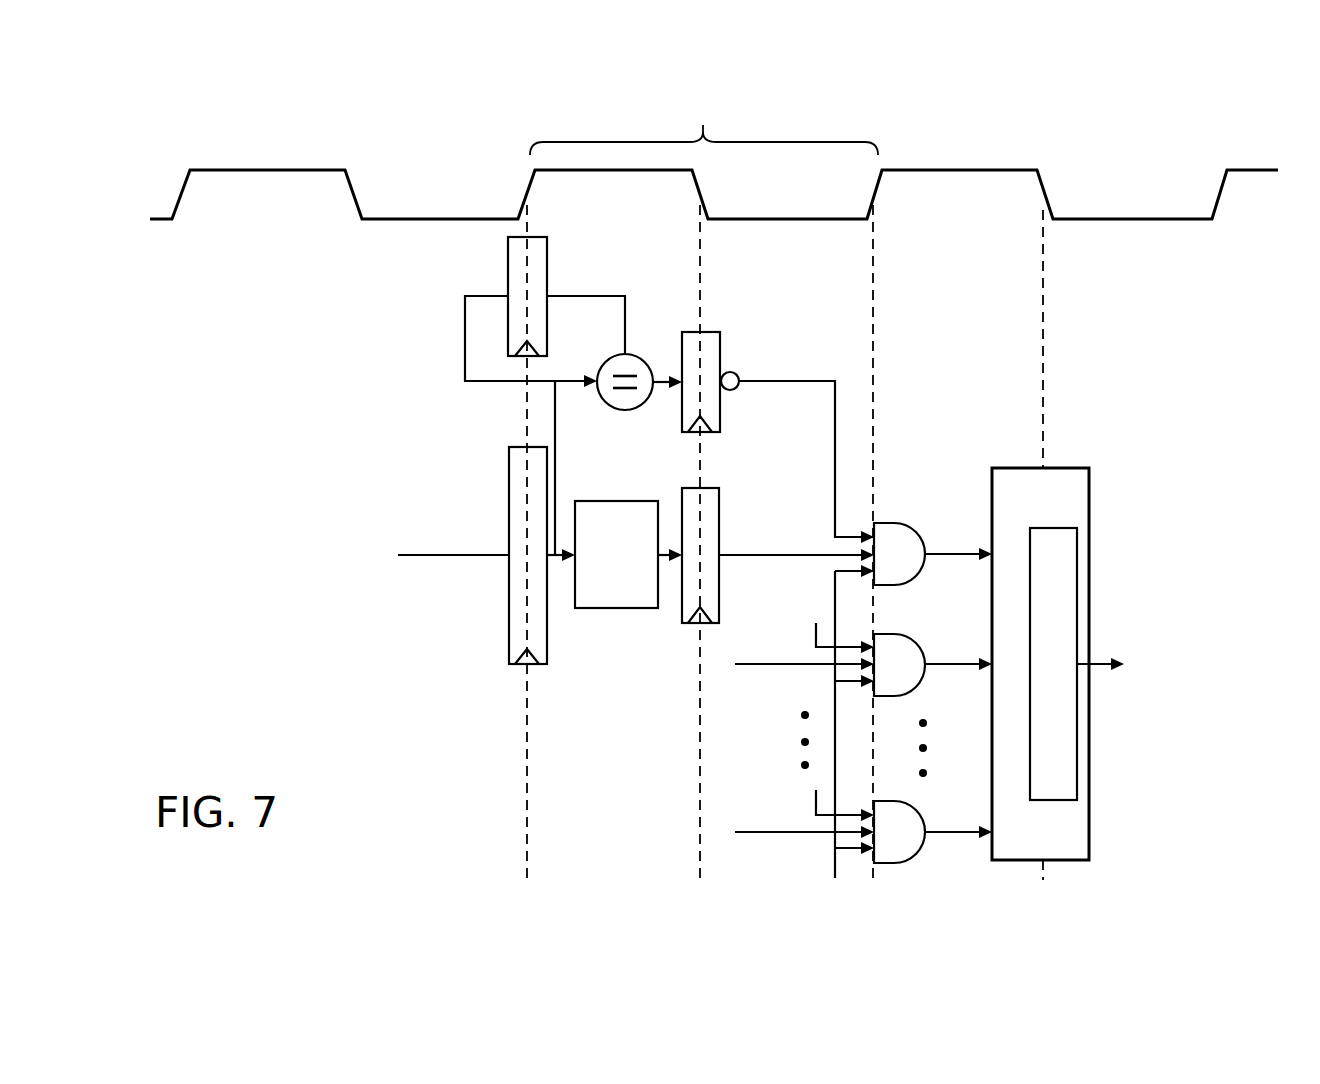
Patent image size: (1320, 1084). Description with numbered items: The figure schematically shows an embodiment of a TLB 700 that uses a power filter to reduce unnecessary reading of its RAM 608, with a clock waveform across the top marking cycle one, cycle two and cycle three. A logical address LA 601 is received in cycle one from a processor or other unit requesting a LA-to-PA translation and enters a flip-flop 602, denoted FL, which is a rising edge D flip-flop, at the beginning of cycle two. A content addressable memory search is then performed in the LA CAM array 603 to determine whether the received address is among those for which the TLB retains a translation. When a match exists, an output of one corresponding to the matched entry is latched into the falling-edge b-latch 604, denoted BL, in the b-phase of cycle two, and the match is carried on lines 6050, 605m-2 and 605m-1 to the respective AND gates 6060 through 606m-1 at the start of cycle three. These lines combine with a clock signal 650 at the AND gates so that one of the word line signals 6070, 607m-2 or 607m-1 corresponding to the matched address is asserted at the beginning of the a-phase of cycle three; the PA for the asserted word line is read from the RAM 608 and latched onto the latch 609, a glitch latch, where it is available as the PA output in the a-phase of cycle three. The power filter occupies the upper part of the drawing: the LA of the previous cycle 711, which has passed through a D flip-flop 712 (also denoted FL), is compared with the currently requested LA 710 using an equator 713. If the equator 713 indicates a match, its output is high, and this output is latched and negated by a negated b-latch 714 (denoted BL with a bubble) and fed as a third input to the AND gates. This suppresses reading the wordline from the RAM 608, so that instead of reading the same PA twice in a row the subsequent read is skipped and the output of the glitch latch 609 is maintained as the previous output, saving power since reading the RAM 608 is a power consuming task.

The TLB 700 is at (1310, 133).
The LA 601 is at (432, 555).
The flip-flop 602 is at (509, 622).
The CAM array 603 is at (615, 608).
The b-latch 604 is at (694, 623).
The line 605m-1 is at (780, 554).
The line 605m-2 is at (770, 664).
The line 6050 is at (768, 832).
The AND gate 606m-1 is at (897, 523).
The AND gate 6060 is at (900, 863).
The word line signal 607m-1 is at (930, 554).
The word line signal 607m-2 is at (935, 665).
The word line signal 6070 is at (945, 832).
The RAM 608 is at (1010, 860).
The latch 609 is at (1057, 800).
The clock signal 650 is at (835, 865).
The currently requested LA 710 is at (568, 386).
The LA of the previous cycle 711 is at (590, 296).
The D flip-flop 712 is at (508, 264).
The equator 713 is at (646, 406).
The negated b-latch 714 is at (720, 350).